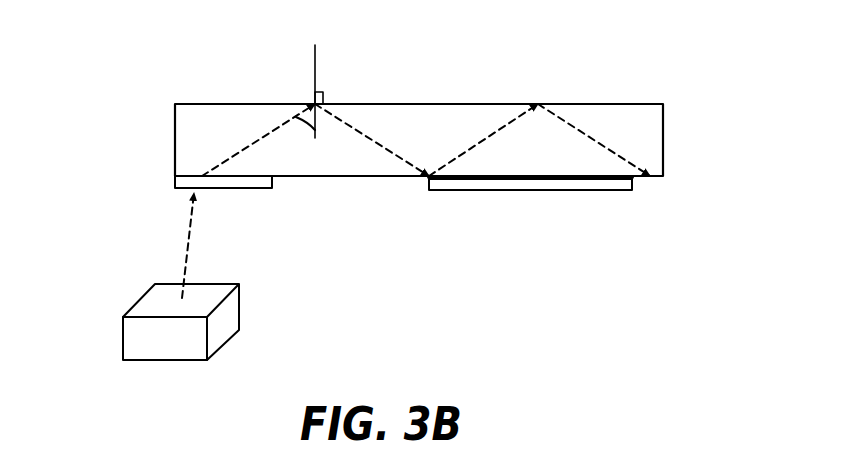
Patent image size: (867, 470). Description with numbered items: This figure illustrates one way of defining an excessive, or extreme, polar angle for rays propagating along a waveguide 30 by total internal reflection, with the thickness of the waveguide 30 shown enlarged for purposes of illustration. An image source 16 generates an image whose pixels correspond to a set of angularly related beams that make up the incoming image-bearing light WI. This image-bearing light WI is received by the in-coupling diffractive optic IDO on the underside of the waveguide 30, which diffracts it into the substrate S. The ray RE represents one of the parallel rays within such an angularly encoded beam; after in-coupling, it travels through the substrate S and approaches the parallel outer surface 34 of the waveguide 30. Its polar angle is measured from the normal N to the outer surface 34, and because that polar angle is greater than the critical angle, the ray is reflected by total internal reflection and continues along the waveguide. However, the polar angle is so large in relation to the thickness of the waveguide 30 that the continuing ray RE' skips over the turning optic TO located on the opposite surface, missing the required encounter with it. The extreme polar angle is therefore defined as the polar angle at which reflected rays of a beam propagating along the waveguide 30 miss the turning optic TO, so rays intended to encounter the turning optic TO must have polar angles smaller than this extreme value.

The waveguide 30 is at (428, 177).
The outer surface 34 is at (195, 102).
The image source 16 is at (123, 335).
The turning optic TO is at (545, 197).
The in-coupling diffractive optic IDO is at (181, 190).
The image-bearing light WI is at (191, 227).
The surface normal N is at (329, 91).
The ray R_E RE is at (255, 140).
The continuing ray R_E' RE' is at (372, 140).
The substrate S is at (640, 140).